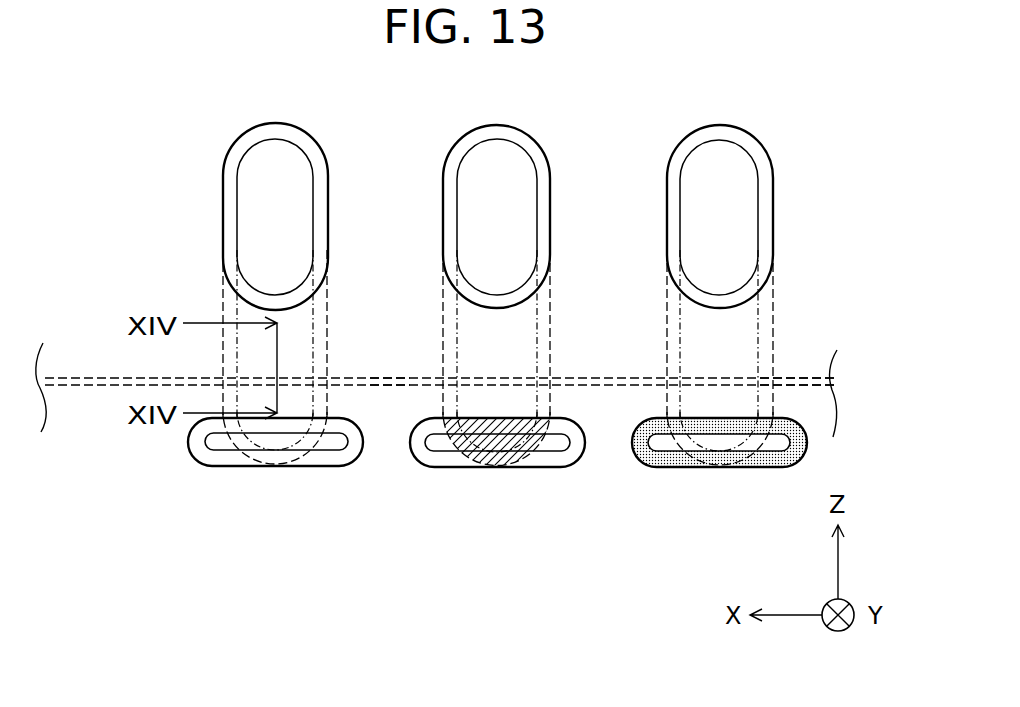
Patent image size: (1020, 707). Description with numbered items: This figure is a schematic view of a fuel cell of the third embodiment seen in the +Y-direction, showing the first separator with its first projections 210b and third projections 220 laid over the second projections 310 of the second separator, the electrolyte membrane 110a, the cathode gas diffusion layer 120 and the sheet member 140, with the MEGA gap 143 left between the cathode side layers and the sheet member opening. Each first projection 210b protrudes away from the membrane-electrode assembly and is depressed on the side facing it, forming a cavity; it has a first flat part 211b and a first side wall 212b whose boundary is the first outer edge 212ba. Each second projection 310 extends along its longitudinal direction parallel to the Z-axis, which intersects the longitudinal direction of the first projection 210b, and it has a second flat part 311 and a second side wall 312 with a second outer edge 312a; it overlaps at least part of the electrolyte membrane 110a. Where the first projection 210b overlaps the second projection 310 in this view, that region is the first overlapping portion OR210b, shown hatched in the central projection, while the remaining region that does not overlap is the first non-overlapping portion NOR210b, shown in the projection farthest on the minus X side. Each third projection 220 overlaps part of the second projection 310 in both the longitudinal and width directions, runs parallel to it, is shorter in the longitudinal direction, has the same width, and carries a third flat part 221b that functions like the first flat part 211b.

The cathode gas diffusion layer 120 is at (353, 372).
The electrolyte membrane 110a is at (388, 387).
The MEGA gap 143 is at (812, 380).
The third projection 220 is at (275, 216).
The third flat part 221b is at (275, 191).
The sheet member 140 is at (362, 390).
The first projection 210b is at (204, 518).
The first side wall 212b is at (205, 503).
The first outer edge 212ba is at (192, 452).
The first flat part 211b is at (318, 450).
The second projection 310 is at (523, 310).
The second side wall 312 is at (447, 338).
The second outer edge 312a is at (547, 318).
The second flat part 311 is at (497, 325).
The first overlapping portion OR210b is at (493, 465).
The first non-overlapping portion NOR210b is at (667, 465).